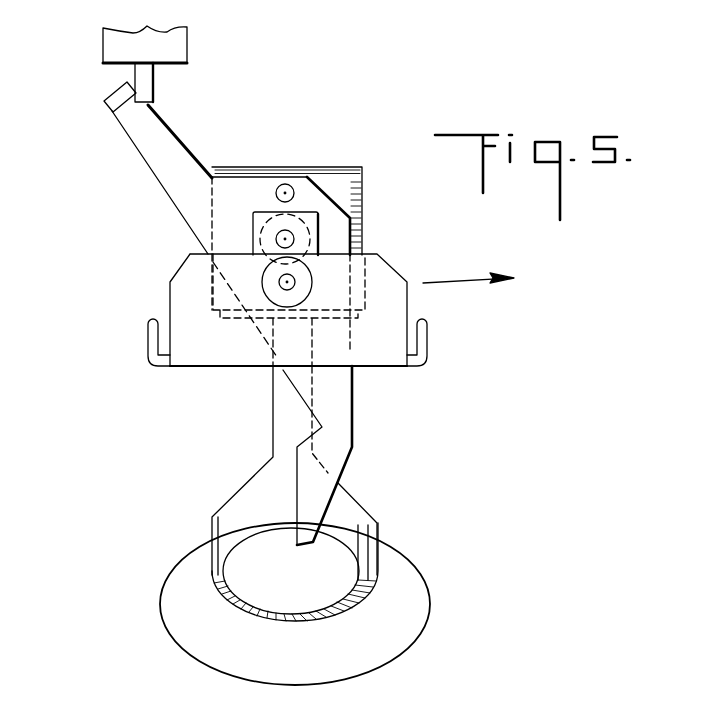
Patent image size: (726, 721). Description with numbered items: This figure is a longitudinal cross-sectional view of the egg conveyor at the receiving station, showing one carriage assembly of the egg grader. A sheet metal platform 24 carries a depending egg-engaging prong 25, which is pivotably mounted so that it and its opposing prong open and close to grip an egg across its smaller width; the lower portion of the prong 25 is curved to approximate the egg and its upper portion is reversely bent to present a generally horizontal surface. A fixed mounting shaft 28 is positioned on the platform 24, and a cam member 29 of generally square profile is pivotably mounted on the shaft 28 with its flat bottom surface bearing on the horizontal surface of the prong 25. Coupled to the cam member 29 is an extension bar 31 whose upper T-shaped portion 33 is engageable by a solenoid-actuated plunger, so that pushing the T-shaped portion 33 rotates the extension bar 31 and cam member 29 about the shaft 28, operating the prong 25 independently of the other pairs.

The platform 24 is at (430, 340).
The egg-engaging prong 25 is at (343, 503).
The fixed mounting shaft 28 is at (293, 238).
The cam member 29 is at (345, 188).
The extension bar 31 is at (162, 158).
The T-shaped portion 33 is at (116, 90).